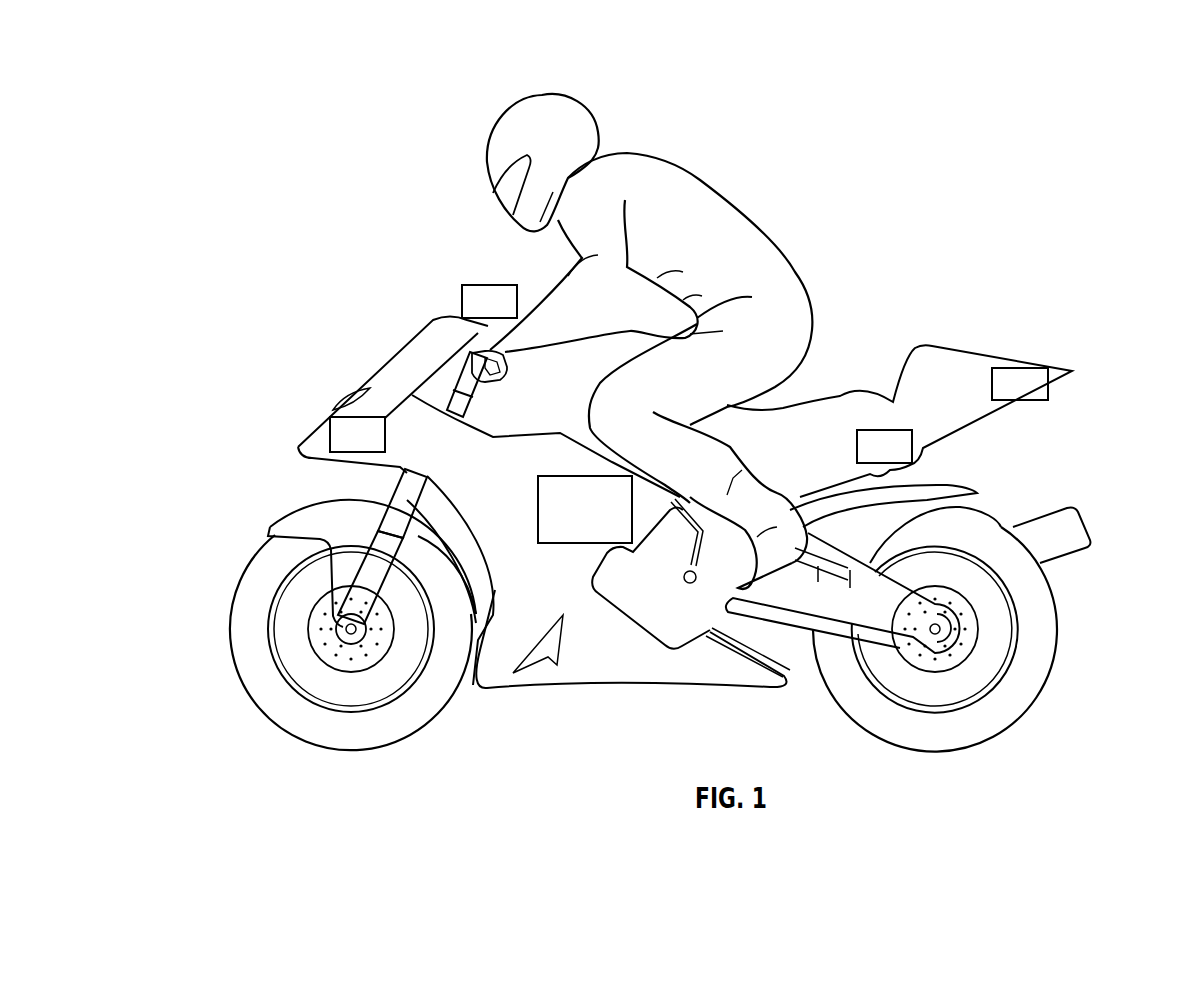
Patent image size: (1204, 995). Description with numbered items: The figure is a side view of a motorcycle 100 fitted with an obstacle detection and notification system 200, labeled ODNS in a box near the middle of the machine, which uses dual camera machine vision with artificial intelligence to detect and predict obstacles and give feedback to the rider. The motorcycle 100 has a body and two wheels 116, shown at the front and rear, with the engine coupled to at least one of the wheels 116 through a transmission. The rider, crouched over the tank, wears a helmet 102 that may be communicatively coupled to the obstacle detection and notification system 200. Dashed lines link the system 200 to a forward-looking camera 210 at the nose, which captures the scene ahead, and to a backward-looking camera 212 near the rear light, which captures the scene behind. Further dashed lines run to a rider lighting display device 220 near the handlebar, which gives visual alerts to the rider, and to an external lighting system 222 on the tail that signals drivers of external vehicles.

The motorcycle 100 is at (1100, 434).
The helmet 102 is at (583, 112).
The wheels 116 is at (238, 680).
The obstacle detection and notification system 200 is at (607, 536).
The forward-looking camera 210 is at (538, 505).
The backward-looking camera 212 is at (632, 515).
The rider lighting display device 220 is at (548, 475).
The external lighting system 222 is at (632, 485).